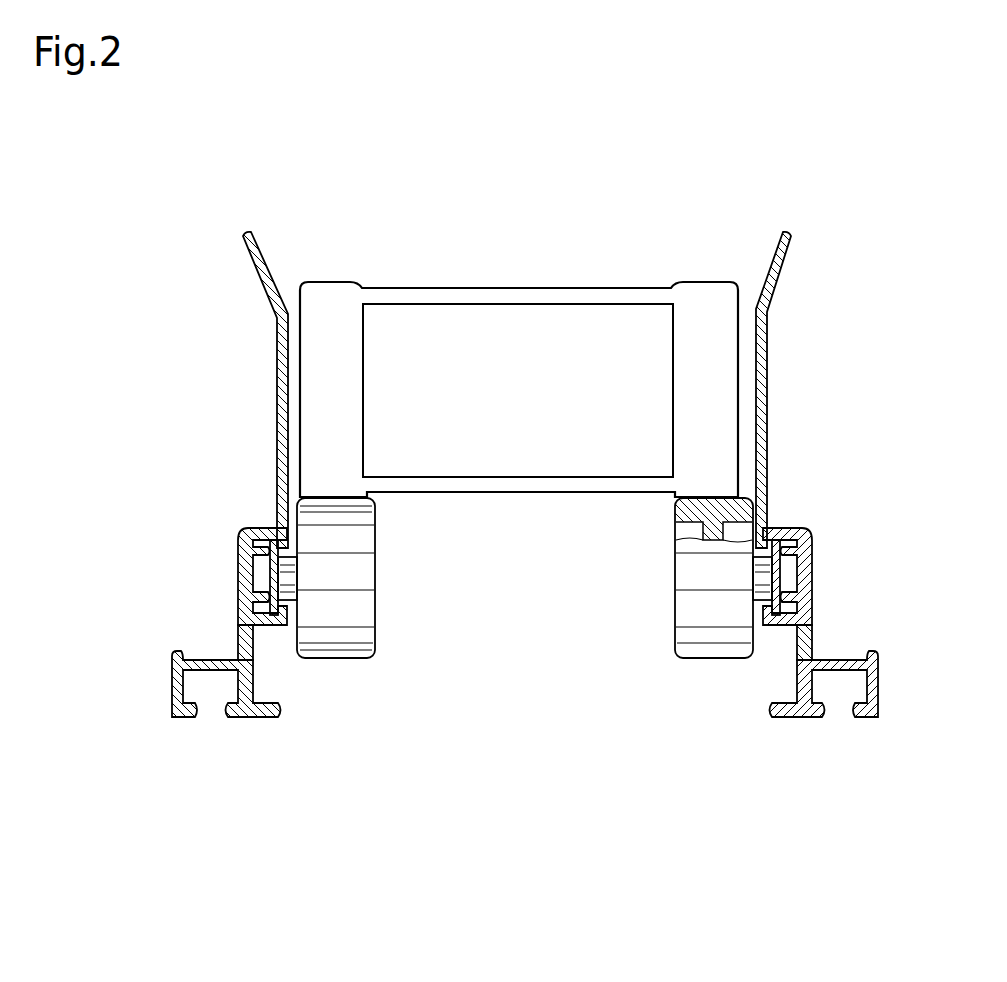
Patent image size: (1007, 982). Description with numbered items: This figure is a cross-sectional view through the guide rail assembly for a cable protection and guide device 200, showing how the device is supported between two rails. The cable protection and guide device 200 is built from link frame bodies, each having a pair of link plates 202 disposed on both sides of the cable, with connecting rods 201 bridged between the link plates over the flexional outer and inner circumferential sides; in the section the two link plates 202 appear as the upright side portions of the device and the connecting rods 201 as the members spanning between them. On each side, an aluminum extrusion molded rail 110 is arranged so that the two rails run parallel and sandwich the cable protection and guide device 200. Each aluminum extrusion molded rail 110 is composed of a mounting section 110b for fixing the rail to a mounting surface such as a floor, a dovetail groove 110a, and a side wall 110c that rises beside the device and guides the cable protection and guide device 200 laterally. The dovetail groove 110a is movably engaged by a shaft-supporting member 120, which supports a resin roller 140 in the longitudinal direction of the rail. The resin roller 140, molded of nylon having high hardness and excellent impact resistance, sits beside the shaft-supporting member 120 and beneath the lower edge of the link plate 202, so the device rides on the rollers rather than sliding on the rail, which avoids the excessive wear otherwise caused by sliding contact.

The cable protection and guide device 200 is at (505, 192).
The connecting rod 201 is at (508, 297).
The link plate 202 is at (332, 300).
The aluminum extrusion molded rail 110 is at (228, 745).
The dovetail groove 110a is at (265, 600).
The mounting section 110b is at (207, 662).
The side wall 110c is at (278, 378).
The shaft-supporting member 120 is at (262, 535).
The resin roller 140 is at (357, 637).